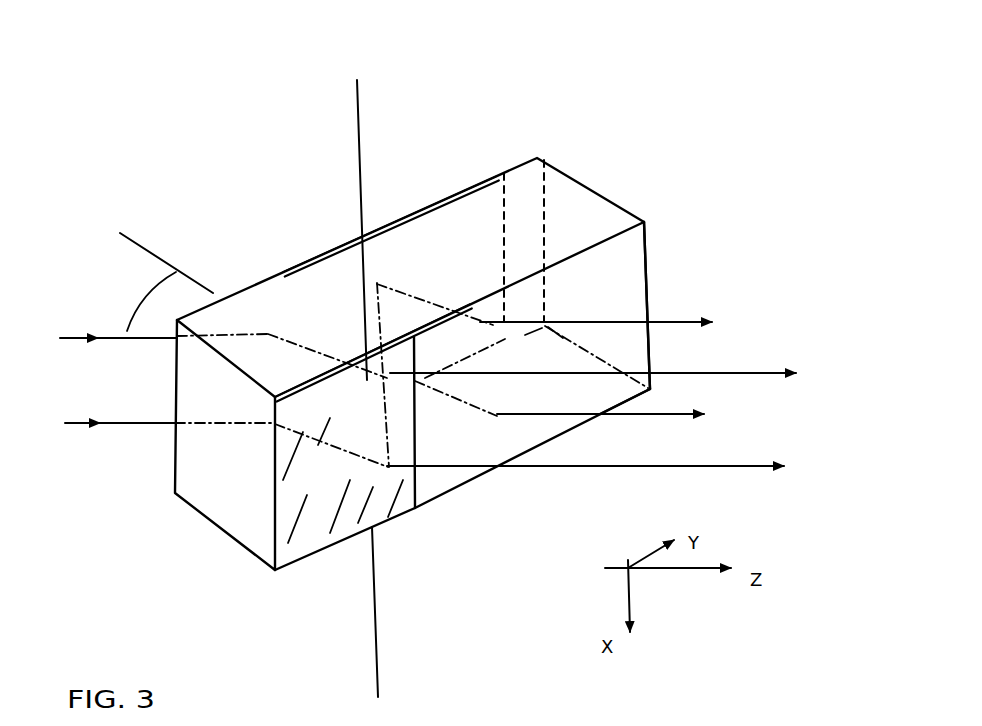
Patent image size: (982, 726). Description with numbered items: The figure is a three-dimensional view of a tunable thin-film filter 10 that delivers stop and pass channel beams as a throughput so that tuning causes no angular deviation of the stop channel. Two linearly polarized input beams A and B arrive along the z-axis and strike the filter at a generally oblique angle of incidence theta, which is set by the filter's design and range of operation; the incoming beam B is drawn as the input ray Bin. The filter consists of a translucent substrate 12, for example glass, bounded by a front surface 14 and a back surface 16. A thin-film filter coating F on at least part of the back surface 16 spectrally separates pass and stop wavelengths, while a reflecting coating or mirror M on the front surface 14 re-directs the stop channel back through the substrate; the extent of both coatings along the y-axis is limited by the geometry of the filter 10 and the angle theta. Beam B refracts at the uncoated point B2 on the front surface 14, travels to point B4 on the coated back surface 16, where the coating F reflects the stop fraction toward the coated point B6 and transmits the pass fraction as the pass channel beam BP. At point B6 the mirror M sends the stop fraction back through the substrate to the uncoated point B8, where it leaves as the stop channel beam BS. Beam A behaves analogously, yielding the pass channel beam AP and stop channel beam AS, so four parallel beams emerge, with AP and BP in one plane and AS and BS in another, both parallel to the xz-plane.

The tunable thin-film filter 10 is at (655, 129).
The substrate 12 is at (577, 182).
The front surface 14 is at (519, 160).
The back surface 16 is at (635, 262).
The mirror M is at (465, 178).
The thin-film filter coating F is at (308, 540).
The beam B is at (357, 118).
The incident beam B Bin is at (78, 338).
The angle of incidence theta is at (160, 298).
The beam A is at (85, 428).
The point B2 is at (268, 320).
The point B4 is at (377, 385).
The point B6 is at (384, 273).
The point B8 is at (490, 312).
The stop channel beam BS is at (727, 311).
The pass channel beam BP is at (778, 368).
The stop channel beam AS is at (733, 414).
The pass channel beam AP is at (760, 470).